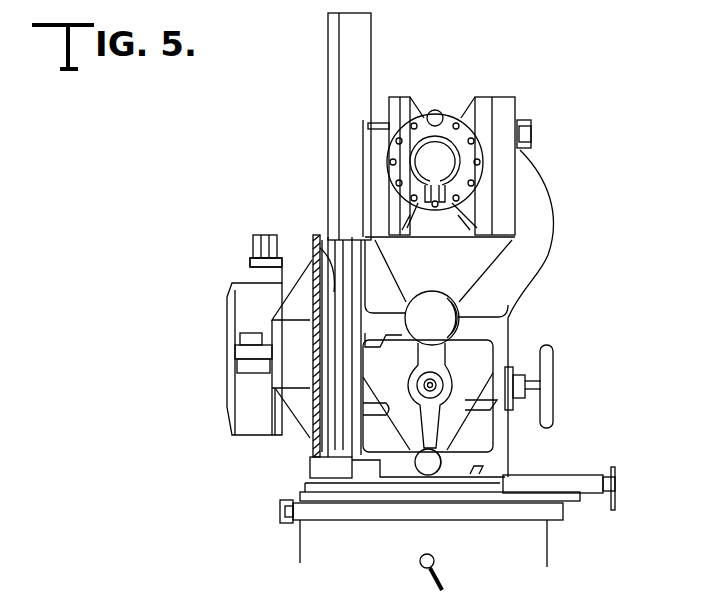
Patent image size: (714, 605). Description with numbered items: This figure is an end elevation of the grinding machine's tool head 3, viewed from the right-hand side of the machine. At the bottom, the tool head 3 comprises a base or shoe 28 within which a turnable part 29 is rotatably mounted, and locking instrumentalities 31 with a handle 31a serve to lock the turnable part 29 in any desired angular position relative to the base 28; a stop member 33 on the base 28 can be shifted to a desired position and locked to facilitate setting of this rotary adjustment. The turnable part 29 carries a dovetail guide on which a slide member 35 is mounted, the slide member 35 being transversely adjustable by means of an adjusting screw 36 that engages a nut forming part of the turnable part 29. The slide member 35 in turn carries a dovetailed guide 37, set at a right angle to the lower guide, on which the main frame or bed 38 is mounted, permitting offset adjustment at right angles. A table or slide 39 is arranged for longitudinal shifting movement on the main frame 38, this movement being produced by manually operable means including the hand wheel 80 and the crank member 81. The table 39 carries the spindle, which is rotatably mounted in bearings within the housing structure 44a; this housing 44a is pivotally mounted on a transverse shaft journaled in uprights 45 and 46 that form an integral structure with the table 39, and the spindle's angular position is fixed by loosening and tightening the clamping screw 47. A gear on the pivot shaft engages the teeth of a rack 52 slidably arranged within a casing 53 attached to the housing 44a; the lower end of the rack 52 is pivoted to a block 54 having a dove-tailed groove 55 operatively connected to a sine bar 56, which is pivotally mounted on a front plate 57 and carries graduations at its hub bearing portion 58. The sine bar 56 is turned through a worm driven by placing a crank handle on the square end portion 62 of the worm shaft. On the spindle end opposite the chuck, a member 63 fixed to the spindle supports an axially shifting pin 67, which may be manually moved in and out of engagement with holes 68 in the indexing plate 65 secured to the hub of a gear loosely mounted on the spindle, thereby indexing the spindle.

The tool head 3 is at (512, 442).
The base or shoe 28 is at (315, 542).
The turnable part 29 is at (484, 500).
The locking instrumentalities 31 is at (421, 565).
The handle 31a is at (446, 584).
The stop member 33 is at (280, 507).
The slide member 35 is at (323, 484).
The adjusting screw 36 is at (618, 482).
The dovetailed guide 37 is at (388, 472).
The main frame or bed 38 is at (308, 462).
The table or slide 39 is at (483, 327).
The housing structure 44a is at (402, 104).
The upright 45 is at (508, 108).
The upright 46 is at (388, 107).
The clamping screw 47 is at (533, 134).
The rack 52 is at (345, 265).
The casing 53 is at (347, 46).
The block 54 is at (315, 258).
The dove-tailed groove 55 is at (330, 316).
The sine bar 56 is at (325, 300).
The front plate 57 is at (311, 360).
The hub bearing portion 58 is at (232, 325).
The square end portion 62 is at (255, 246).
The member 63 is at (421, 207).
The indexing plate 65 is at (473, 172).
The pin 67 is at (437, 111).
The holes 68 is at (441, 208).
The hand wheel 80 is at (548, 358).
The crank member 81 is at (431, 422).